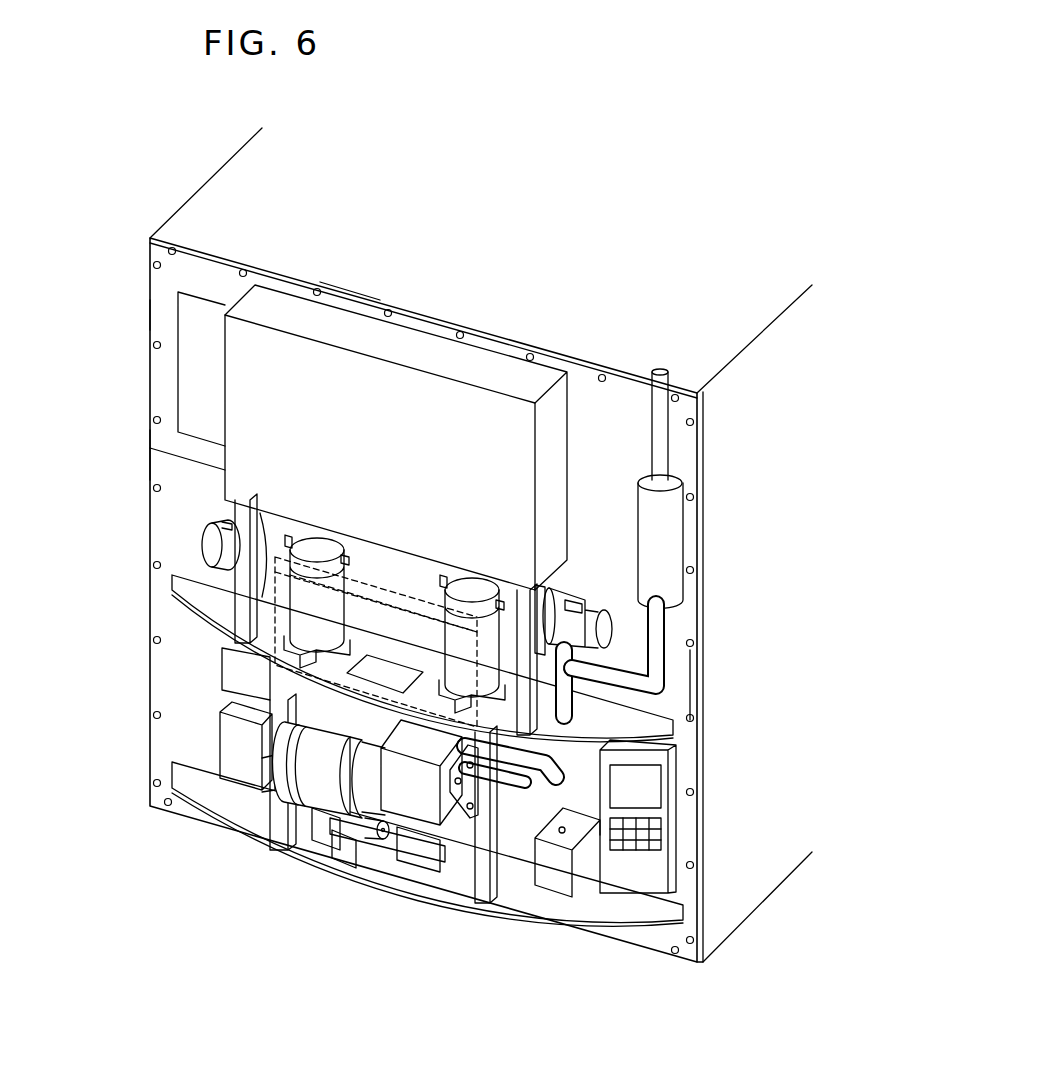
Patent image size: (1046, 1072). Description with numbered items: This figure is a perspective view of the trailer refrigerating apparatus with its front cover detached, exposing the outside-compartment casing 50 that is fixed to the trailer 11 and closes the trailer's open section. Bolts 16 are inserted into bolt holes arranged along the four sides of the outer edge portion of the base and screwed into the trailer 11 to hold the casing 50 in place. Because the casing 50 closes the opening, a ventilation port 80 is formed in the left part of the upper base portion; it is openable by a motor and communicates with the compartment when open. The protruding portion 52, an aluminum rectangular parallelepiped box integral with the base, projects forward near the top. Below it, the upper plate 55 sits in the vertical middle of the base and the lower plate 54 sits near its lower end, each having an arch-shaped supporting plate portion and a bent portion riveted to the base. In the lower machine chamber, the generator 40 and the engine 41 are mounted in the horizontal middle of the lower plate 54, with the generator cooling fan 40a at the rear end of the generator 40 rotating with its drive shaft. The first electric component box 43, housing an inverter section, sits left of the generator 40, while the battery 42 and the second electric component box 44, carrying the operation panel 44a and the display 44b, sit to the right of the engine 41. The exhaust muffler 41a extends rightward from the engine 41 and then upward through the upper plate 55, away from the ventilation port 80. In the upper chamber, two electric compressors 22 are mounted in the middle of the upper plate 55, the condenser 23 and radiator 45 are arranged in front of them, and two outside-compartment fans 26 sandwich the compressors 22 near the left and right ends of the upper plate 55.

The trailer 11 is at (198, 188).
The bolt 16 is at (388, 313).
The electric compressor 22 is at (432, 620).
The condenser 23 is at (368, 560).
The outside-compartment fan 26 is at (205, 542).
The generator 40 is at (320, 775).
The generator cooling fan 40a is at (285, 770).
The engine 41 is at (415, 796).
The exhaust muffler 41a is at (668, 458).
The battery 42 is at (548, 868).
The first electric component box 43 is at (240, 775).
The second electric component box 44 is at (689, 877).
The operation panel 44a is at (657, 836).
The display 44b is at (652, 778).
The radiator 45 is at (408, 580).
The outside-compartment casing 50 is at (147, 318).
The protruding portion 52 is at (432, 405).
The lower plate 54 is at (218, 800).
The upper plate 55 is at (198, 603).
The ventilation port 80 is at (203, 318).